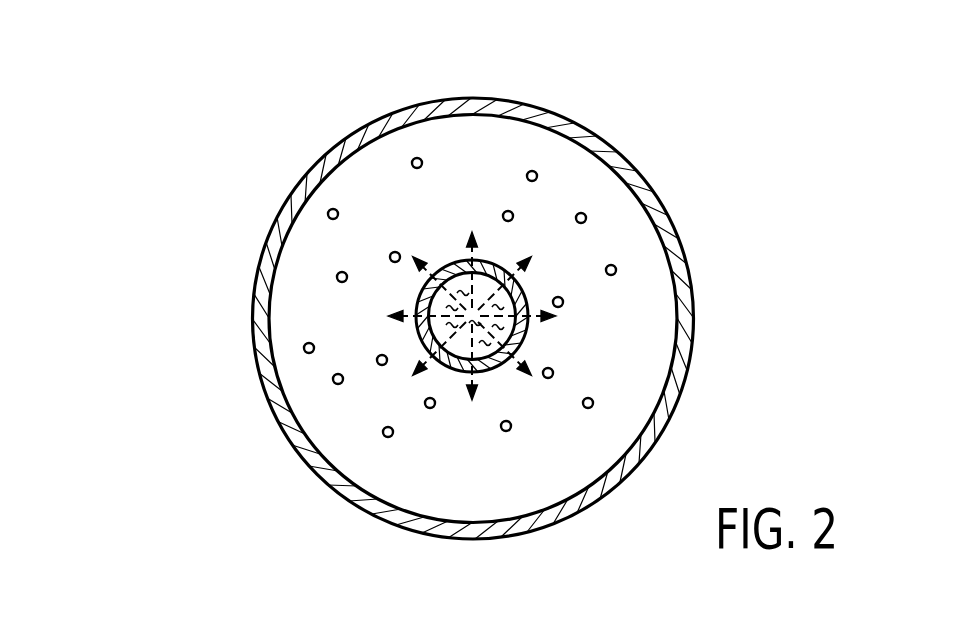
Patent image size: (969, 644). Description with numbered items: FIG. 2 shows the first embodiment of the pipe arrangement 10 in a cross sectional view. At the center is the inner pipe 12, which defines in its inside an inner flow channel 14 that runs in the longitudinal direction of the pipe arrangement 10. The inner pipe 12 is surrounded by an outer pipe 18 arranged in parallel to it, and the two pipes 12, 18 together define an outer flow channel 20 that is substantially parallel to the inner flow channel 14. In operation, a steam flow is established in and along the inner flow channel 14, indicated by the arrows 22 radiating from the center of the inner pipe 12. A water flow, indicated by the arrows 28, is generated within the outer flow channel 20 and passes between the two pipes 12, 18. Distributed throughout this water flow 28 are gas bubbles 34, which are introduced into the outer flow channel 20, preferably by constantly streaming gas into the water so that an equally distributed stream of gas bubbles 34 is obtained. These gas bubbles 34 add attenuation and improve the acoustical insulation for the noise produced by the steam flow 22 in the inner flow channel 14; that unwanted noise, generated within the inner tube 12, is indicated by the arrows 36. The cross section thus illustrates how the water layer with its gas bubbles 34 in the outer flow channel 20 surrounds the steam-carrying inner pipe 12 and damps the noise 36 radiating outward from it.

The pipe arrangement 10 is at (252, 137).
The inner pipe 12 is at (418, 352).
The inner flow channel 14 is at (465, 340).
The outer pipe 18 is at (597, 127).
The outer flow channel 20 is at (322, 290).
The steam flow 22 is at (475, 310).
The water flow 28 is at (385, 178).
The gas bubbles 34 is at (614, 266).
The noise arrows 36 is at (513, 360).